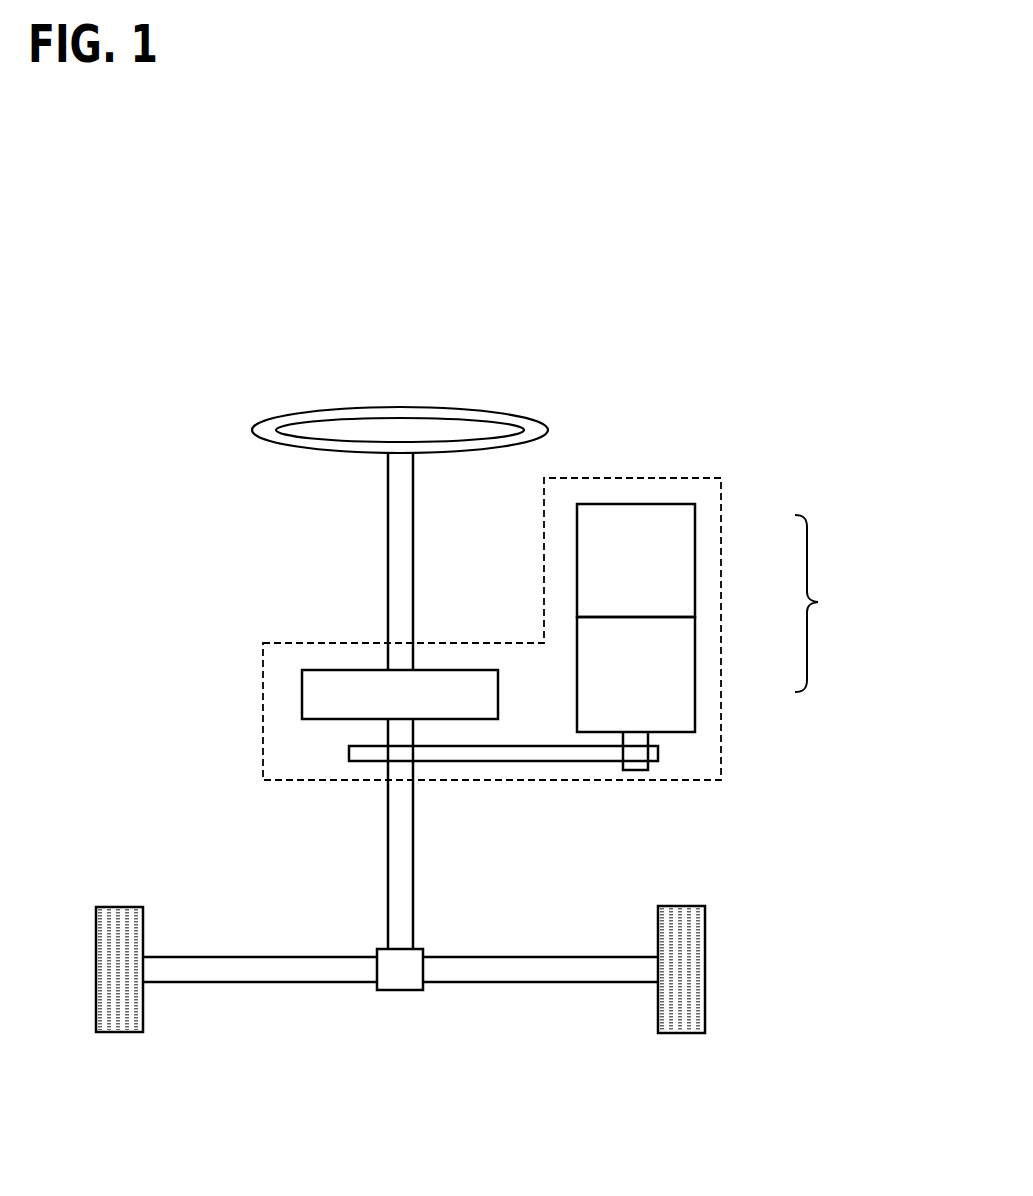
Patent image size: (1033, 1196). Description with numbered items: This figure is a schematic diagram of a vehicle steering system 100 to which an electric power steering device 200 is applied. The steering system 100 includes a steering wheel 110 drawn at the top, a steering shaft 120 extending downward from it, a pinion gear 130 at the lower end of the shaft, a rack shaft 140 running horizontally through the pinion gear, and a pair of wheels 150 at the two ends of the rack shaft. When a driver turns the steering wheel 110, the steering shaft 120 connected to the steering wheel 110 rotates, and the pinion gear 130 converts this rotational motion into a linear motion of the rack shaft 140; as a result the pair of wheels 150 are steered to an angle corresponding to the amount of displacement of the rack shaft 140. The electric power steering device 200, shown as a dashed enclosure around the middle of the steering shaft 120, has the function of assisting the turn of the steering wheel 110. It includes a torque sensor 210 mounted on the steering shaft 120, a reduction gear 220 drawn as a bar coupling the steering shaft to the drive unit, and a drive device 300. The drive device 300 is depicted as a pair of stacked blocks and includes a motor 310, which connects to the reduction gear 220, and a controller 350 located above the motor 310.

The steering system 100 is at (771, 388).
The steering wheel 110 is at (462, 409).
The steering shaft 120 is at (413, 568).
The pinion gear 130 is at (418, 948).
The rack shaft 140 is at (510, 956).
The wheels 150 is at (675, 905).
The electric power steering device 200 is at (679, 478).
The torque sensor 210 is at (430, 668).
The reduction gear 220 is at (514, 746).
The drive device 300 is at (831, 603).
The motor 310 is at (695, 677).
The controller 350 is at (695, 546).